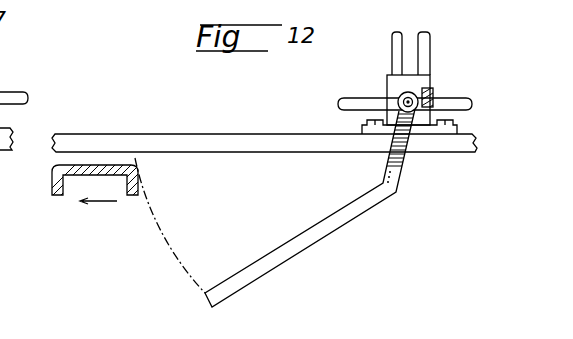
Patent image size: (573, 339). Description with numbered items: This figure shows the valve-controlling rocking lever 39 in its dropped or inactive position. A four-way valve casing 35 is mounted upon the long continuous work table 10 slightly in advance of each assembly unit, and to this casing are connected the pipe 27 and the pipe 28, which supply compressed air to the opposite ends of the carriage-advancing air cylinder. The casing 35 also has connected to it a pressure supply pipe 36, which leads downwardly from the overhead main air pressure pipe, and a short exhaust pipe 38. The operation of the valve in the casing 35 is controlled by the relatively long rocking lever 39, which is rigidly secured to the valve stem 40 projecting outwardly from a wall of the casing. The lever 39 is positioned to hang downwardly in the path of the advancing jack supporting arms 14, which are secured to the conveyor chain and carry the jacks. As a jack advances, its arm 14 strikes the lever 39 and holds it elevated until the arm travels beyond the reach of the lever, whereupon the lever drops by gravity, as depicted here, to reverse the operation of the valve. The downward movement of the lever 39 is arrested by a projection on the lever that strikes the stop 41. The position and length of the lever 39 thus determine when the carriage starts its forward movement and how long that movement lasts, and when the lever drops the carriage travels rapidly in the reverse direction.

The table 10 is at (202, 133).
The transversely extending arm 14 is at (50, 184).
The pipe 27 is at (431, 40).
The pipe 28 is at (392, 47).
The four-way valve casing 35 is at (421, 124).
The pressure supply pipe 36 is at (28, 92).
The exhaust pipe 38 is at (338, 101).
The rocking lever 39 is at (350, 217).
The valve stem 40 is at (387, 82).
The stop 41 is at (432, 90).